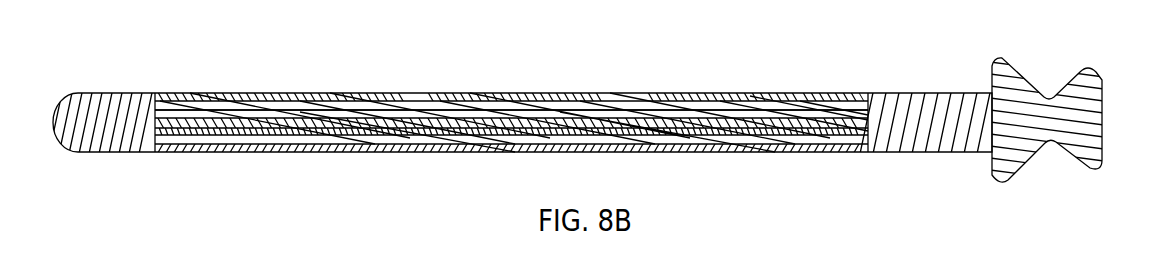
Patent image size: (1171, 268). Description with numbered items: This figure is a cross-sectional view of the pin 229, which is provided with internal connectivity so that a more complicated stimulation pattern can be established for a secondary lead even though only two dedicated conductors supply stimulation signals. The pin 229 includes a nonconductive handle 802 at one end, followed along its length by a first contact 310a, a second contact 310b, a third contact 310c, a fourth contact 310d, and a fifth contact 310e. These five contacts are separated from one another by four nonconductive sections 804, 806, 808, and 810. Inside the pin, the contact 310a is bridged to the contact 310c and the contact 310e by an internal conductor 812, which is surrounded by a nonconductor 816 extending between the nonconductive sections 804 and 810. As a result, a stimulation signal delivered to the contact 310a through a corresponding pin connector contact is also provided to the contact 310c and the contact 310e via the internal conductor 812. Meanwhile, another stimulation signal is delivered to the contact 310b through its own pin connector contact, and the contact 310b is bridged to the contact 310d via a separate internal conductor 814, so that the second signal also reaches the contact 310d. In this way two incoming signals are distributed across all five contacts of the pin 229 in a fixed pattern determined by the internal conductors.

The fifth contact 310e is at (95, 93).
The fourth contact 310d is at (289, 102).
The third contact 310c is at (510, 93).
The second contact 310b is at (721, 95).
The first contact 310a is at (920, 92).
The nonconductive section 810 is at (183, 100).
The nonconductive section 808 is at (403, 98).
The nonconductive section 806 is at (645, 110).
The internal conductor 814 is at (625, 108).
The nonconductor 816 is at (402, 123).
The internal conductor 812 is at (840, 137).
The nonconductive section 804 is at (838, 98).
The nonconductive handle 802 is at (1003, 58).
The pin 229 is at (1118, 100).